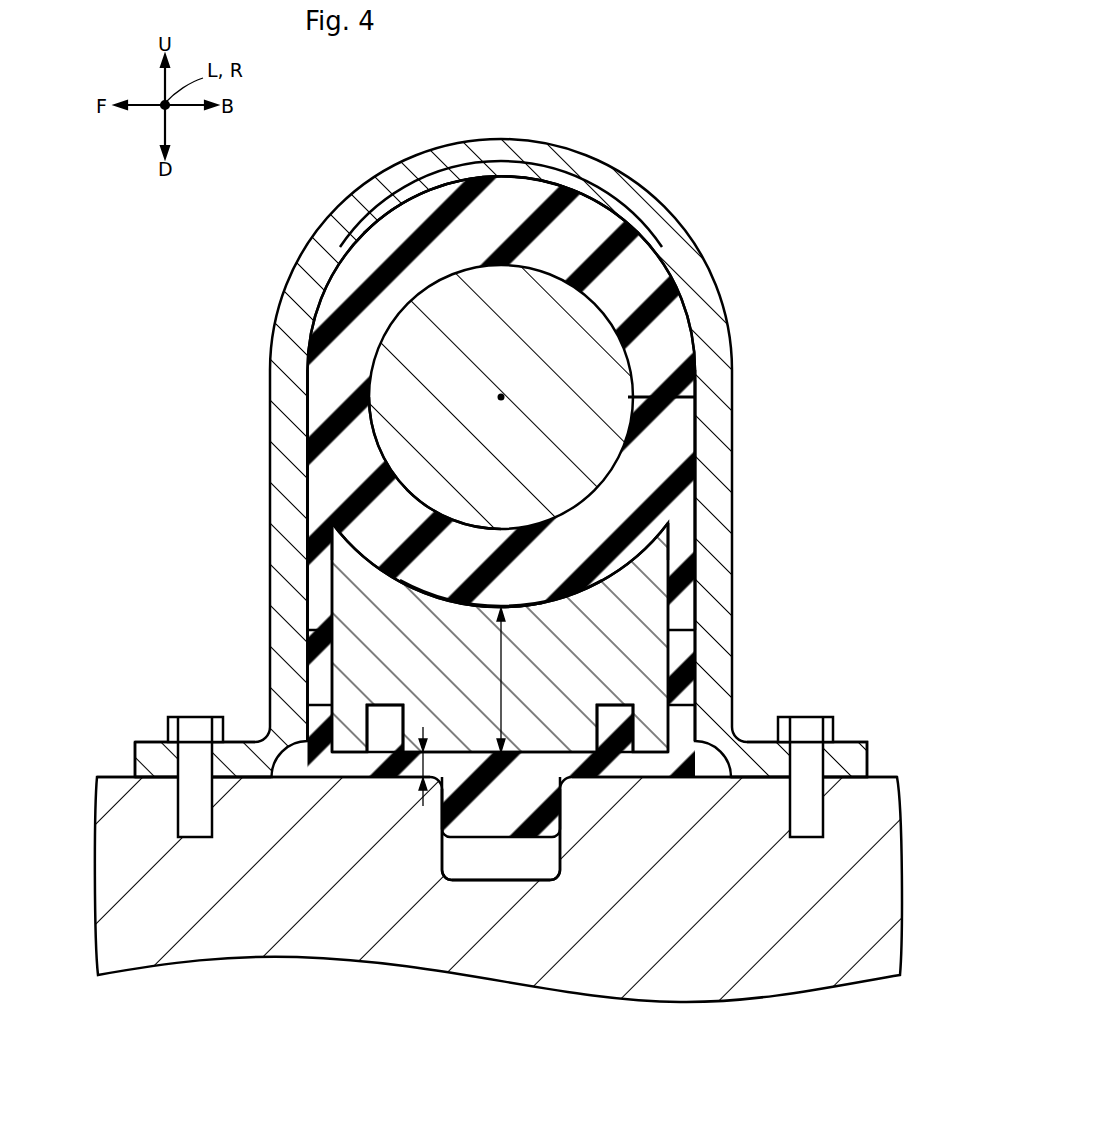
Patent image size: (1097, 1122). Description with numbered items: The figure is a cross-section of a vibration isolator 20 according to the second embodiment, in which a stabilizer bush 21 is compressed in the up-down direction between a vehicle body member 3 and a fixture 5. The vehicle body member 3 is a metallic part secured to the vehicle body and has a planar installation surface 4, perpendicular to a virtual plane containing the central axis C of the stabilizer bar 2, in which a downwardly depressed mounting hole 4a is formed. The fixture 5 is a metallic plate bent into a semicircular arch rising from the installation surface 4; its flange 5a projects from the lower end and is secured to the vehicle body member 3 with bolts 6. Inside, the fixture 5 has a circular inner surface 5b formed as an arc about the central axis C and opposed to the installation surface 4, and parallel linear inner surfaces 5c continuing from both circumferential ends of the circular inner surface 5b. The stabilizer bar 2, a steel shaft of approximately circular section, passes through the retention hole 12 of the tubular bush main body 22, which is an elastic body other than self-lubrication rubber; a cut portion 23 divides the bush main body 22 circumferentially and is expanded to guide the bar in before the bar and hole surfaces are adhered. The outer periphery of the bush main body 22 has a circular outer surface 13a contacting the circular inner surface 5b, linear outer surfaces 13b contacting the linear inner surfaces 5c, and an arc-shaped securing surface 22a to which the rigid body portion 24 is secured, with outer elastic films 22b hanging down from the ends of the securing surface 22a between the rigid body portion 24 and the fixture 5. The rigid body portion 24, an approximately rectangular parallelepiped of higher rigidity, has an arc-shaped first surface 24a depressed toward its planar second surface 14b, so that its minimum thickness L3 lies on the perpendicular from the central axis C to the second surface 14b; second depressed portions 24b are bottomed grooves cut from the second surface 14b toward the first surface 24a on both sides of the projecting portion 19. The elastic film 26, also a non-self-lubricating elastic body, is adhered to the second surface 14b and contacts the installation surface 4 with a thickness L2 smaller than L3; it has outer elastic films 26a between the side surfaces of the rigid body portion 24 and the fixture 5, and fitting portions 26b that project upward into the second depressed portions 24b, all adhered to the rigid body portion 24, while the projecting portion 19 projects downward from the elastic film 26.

The vibration isolator 20 is at (733, 118).
The fixture 5 is at (605, 173).
The flange 5a is at (862, 738).
The circular inner surface 5b is at (533, 186).
The linear inner surfaces 5c is at (694, 430).
The circular outer surface 13a is at (403, 197).
The linear outer surfaces 13b is at (697, 492).
The stabilizer bar 2 is at (565, 325).
The retention hole 12 is at (421, 487).
The central axis C is at (504, 395).
The stabilizer bush 21 is at (668, 237).
The bush main body 22 is at (673, 333).
The securing surface 22a is at (492, 612).
The outer elastic films 22b is at (683, 602).
The cut portion 23 is at (697, 407).
The rigid body portion 24 is at (424, 626).
The first surface 24a is at (520, 608).
The second depressed portions 24b is at (596, 728).
The second surface 14b is at (536, 760).
The elastic film 26 is at (352, 762).
The outer elastic films 26a is at (684, 707).
The fitting portions 26b is at (617, 703).
The vehicle body member 3 is at (687, 980).
The installation surface 4 is at (647, 768).
The mounting hole 4a is at (452, 882).
The projecting portion 19 is at (483, 820).
The bolts 6 is at (808, 820).
The thickness of elastic film L2 is at (421, 788).
The minimum dimension of rigid body portion L3 is at (503, 652).